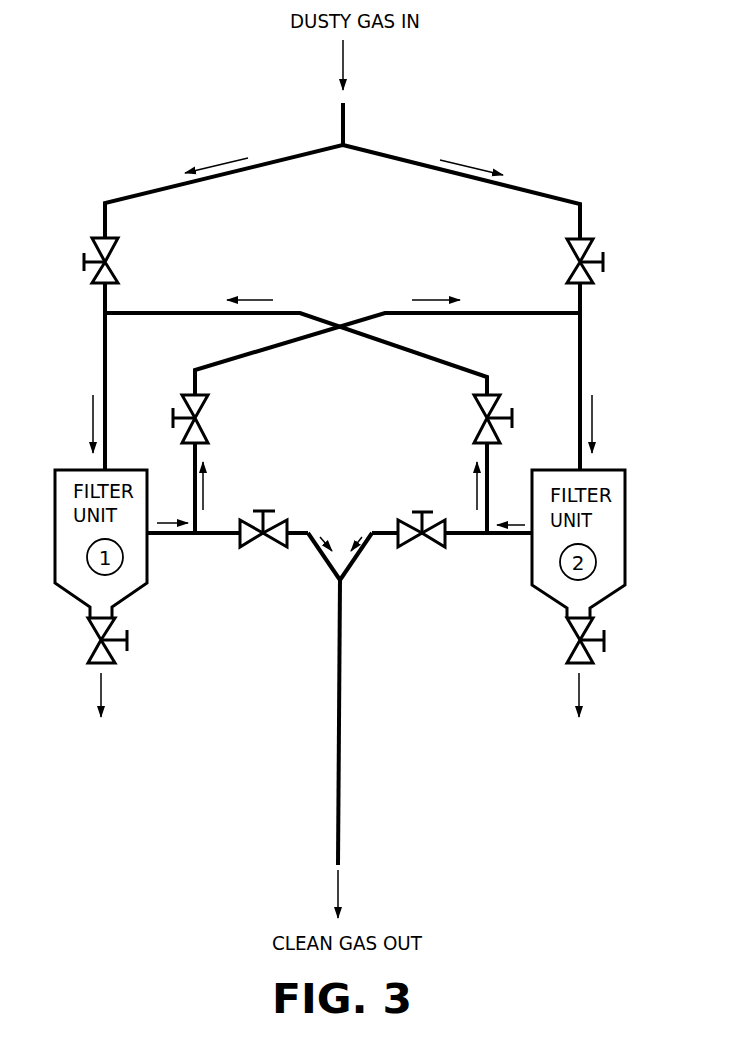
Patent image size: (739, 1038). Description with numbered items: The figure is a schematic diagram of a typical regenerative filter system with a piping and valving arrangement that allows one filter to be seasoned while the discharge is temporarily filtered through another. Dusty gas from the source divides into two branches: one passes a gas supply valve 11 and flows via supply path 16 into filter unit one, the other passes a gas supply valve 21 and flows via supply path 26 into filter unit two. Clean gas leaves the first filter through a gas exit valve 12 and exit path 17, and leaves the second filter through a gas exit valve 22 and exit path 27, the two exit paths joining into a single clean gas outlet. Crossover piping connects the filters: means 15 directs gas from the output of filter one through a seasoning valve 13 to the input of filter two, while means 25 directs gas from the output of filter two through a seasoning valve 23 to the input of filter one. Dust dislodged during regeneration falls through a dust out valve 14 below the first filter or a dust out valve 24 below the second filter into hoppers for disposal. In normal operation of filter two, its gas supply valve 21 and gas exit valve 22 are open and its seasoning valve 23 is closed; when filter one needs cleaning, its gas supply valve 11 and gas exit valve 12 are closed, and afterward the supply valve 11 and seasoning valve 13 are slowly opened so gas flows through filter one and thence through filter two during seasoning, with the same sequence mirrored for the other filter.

The gas supply valve 11 is at (116, 262).
The gas supply valve 21 is at (568, 262).
The gas exit valve 12 is at (263, 540).
The gas exit valve 22 is at (444, 540).
The seasoning valve 13 is at (205, 421).
The seasoning valve 23 is at (479, 422).
The dust out valve 14 is at (108, 645).
The dust out valve 24 is at (573, 643).
The means for directing fluid 15 is at (256, 352).
The means for directing fluid 25 is at (406, 346).
The gas supply path 16 is at (104, 372).
The gas supply path 26 is at (581, 377).
The gas exit path 17 is at (330, 572).
The gas exit path 27 is at (350, 572).